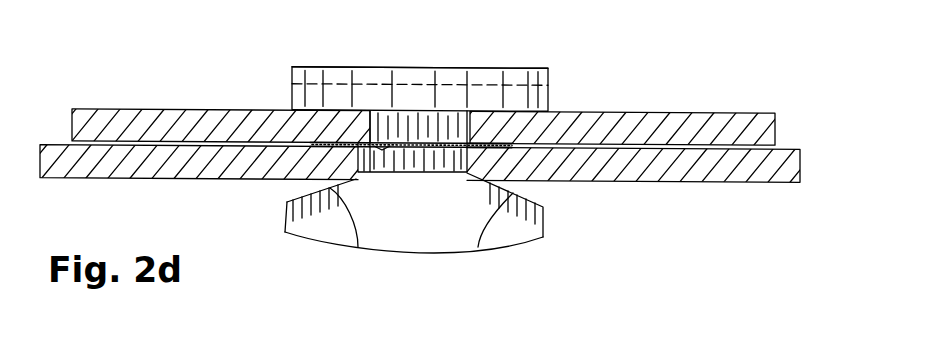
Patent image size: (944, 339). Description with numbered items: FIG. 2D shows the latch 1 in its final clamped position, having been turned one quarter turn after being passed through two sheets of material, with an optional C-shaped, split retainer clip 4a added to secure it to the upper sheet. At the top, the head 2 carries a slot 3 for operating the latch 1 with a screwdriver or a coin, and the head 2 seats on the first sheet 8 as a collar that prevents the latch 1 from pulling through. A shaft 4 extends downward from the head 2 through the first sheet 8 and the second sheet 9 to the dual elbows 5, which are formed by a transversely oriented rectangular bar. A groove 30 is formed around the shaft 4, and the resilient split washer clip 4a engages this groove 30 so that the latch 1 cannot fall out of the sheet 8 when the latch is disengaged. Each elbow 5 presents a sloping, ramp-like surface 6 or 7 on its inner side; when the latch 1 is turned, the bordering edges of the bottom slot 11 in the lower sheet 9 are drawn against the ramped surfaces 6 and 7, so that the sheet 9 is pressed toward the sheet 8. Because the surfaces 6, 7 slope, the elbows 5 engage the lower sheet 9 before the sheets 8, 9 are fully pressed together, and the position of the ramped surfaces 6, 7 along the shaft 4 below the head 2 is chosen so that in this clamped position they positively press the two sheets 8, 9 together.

The latch 1 is at (333, 64).
The head 2 is at (517, 82).
The slot 3 is at (407, 83).
The shaft 4 is at (460, 154).
The split washer retainer C-clip 4a is at (475, 146).
The dual elbows 5 is at (313, 222).
The ramp-like surface 6 is at (358, 249).
The ramp-like surface 7 is at (478, 250).
The first sheet member 8 is at (165, 120).
The second sheet member 9 is at (180, 158).
The slot 11 is at (312, 146).
The groove 30 is at (380, 149).